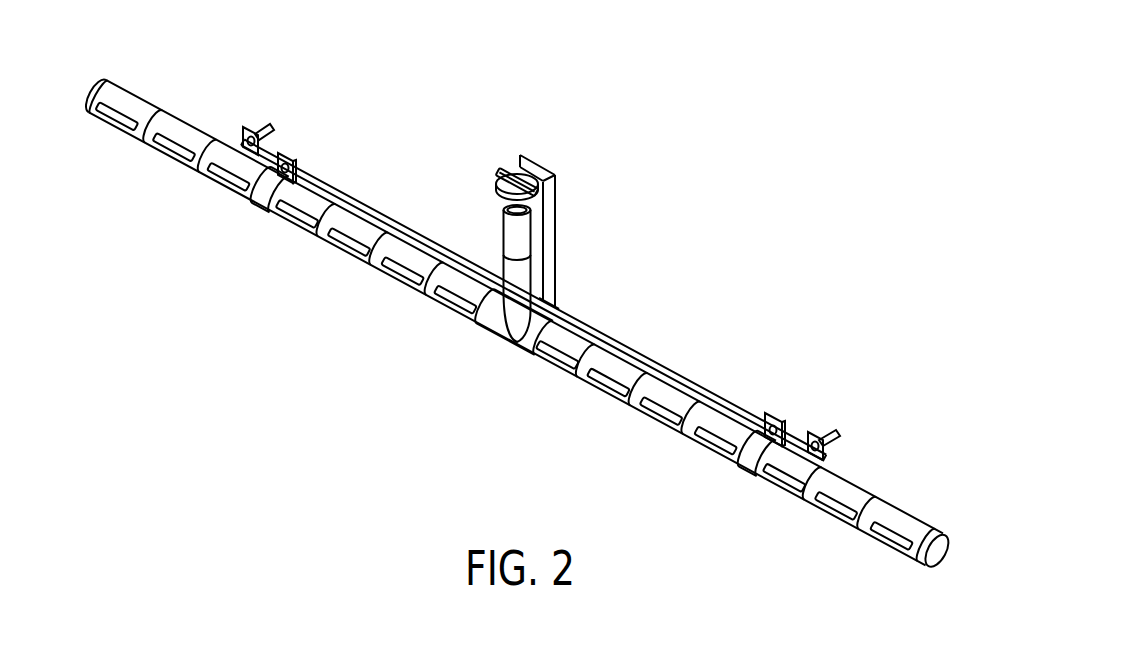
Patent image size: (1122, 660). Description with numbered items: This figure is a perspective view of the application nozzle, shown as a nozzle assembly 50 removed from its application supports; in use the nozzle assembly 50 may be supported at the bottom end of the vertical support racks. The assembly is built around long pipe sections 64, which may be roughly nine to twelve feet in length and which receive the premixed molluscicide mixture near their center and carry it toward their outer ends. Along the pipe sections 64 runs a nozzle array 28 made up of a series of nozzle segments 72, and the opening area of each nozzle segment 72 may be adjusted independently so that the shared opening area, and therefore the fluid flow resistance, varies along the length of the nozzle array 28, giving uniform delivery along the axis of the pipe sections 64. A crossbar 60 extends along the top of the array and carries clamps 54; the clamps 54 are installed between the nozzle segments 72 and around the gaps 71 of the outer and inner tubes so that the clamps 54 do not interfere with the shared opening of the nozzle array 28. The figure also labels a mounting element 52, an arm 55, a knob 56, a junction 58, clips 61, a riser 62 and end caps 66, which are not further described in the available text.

The nozzle array 28 is at (458, 335).
The nozzle assembly 50 is at (822, 205).
The mounting bracket assembly 52 is at (579, 301).
The clamps 54 is at (265, 212).
The bracket arm 55 is at (556, 215).
The knob 56 is at (498, 182).
The tee fitting 58 is at (506, 333).
The crossbar 60 is at (688, 373).
The clip 61 is at (263, 124).
The riser pipe 62 is at (508, 224).
The pipe sections 64 is at (222, 205).
The end cap 66 is at (98, 88).
The gaps 71 is at (395, 292).
The nozzle segments 72 is at (126, 138).